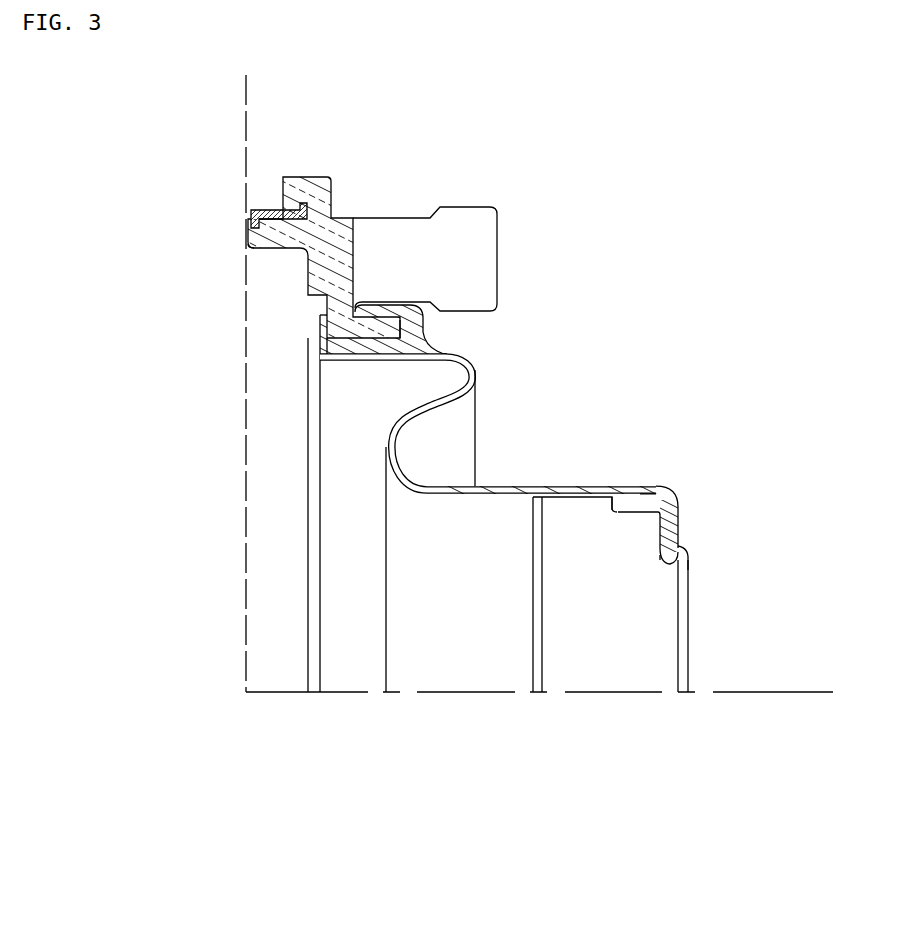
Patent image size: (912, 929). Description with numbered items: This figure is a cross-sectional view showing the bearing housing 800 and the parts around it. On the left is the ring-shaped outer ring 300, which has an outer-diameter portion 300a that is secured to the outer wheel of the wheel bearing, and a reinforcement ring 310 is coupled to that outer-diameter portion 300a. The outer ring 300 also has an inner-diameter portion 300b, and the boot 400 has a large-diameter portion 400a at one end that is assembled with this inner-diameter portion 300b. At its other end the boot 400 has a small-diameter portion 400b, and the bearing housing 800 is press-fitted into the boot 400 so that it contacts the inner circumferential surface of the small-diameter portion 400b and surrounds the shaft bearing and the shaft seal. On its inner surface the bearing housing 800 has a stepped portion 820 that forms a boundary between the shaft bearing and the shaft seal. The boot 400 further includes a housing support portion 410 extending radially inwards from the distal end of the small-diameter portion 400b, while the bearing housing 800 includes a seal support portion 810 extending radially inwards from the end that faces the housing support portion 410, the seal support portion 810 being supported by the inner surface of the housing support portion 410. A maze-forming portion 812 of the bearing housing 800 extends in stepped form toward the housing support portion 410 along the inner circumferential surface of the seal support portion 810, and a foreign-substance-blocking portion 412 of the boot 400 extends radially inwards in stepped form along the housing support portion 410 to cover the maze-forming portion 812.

The outer ring 300 is at (270, 345).
The outer-diameter portion 300a is at (248, 238).
The inner-diameter portion 300b is at (350, 330).
The reinforcement ring 310 is at (273, 210).
The boot 400 is at (423, 485).
The large-diameter portion 400a is at (383, 345).
The small-diameter portion 400b is at (662, 491).
The housing support portion 410 is at (672, 518).
The foreign-substance-blocking portion 412 is at (688, 570).
The bearing housing 800 is at (583, 670).
The seal support portion 810 is at (650, 537).
The maze-forming portion 812 is at (675, 567).
The stepped portion 820 is at (615, 496).